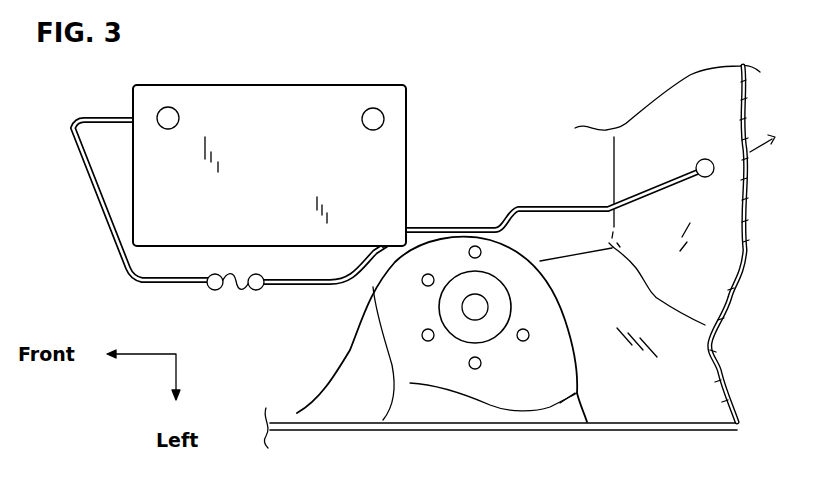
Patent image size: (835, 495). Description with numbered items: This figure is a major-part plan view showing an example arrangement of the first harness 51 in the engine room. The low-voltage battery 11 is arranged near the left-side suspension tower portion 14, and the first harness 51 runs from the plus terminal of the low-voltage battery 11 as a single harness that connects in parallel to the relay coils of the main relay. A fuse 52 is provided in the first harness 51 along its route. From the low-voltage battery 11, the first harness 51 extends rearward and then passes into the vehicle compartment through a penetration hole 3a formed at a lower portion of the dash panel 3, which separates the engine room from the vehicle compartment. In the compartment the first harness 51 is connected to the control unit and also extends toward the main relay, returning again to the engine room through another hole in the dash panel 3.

The dash panel 3 is at (725, 103).
The penetration hole 3a is at (715, 175).
The low-voltage battery 11 is at (301, 100).
The left-side suspension tower portion 14 is at (522, 395).
The first harness 51 is at (533, 207).
The fuse 52 is at (237, 290).